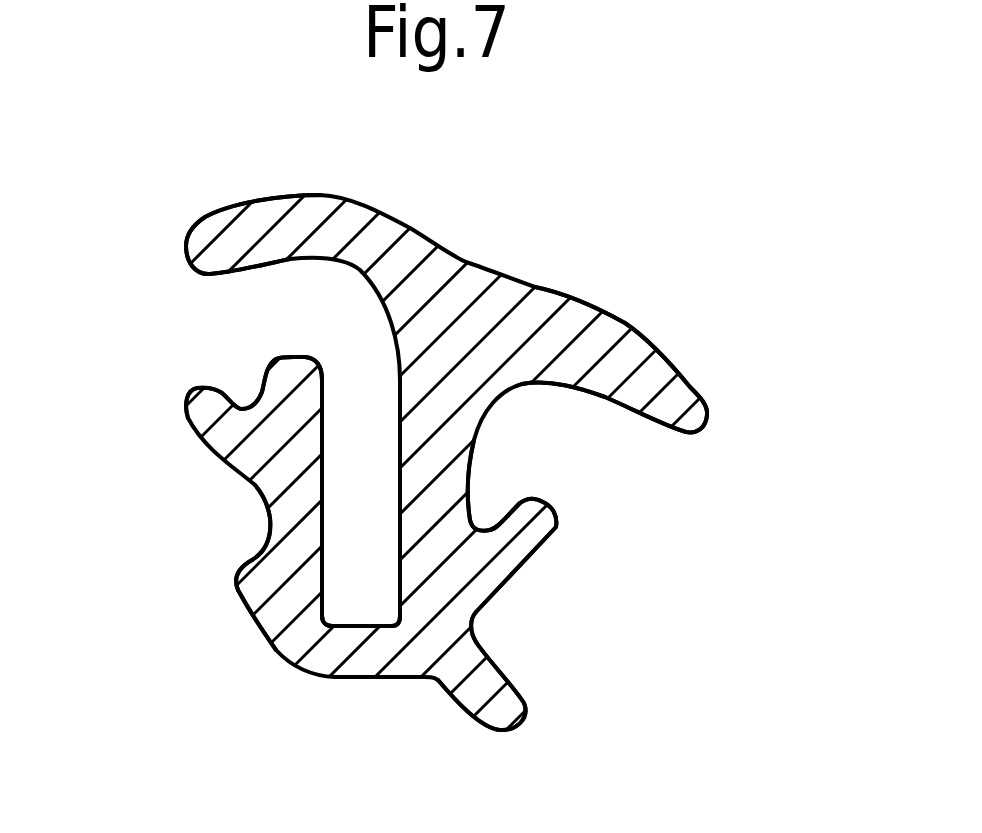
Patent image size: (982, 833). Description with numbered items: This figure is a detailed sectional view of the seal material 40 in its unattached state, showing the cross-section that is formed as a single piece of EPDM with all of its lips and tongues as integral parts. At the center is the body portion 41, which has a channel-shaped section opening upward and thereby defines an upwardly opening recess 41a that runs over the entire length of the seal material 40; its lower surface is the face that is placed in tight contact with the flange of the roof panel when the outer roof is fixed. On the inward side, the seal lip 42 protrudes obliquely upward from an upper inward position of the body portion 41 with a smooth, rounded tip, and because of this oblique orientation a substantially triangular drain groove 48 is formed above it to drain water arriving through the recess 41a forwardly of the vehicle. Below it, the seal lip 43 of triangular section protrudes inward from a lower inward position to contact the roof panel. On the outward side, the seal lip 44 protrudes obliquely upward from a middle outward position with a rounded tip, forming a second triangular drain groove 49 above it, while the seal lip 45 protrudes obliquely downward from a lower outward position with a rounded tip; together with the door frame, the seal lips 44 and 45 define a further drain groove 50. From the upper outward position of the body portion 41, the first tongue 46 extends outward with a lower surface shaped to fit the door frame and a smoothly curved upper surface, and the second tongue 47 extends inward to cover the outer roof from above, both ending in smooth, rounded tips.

The seal material 40 is at (560, 282).
The body portion 41 is at (422, 513).
The recess 41a is at (350, 488).
The seal lip 42 is at (195, 413).
The seal lip 43 is at (235, 577).
The seal lip 44 is at (547, 537).
The seal lip 45 is at (510, 710).
The first tongue 46 is at (703, 412).
The second tongue 47 is at (193, 248).
The drain groove 48 is at (243, 385).
The drain groove 49 is at (490, 500).
The drain groove 50 is at (495, 632).